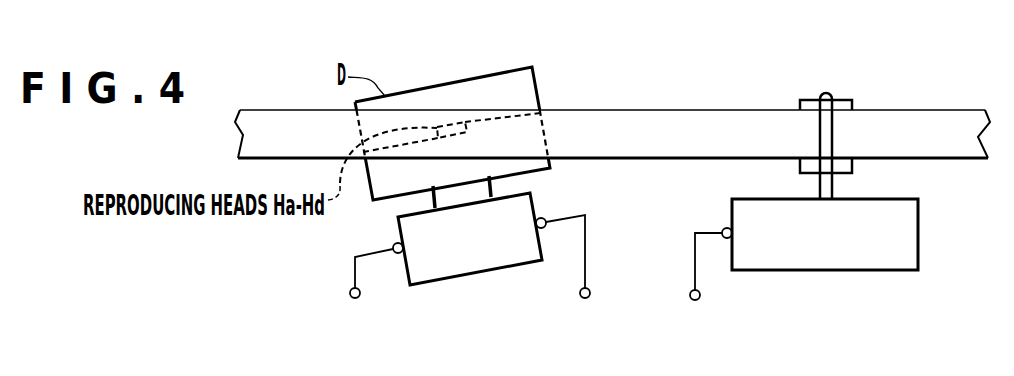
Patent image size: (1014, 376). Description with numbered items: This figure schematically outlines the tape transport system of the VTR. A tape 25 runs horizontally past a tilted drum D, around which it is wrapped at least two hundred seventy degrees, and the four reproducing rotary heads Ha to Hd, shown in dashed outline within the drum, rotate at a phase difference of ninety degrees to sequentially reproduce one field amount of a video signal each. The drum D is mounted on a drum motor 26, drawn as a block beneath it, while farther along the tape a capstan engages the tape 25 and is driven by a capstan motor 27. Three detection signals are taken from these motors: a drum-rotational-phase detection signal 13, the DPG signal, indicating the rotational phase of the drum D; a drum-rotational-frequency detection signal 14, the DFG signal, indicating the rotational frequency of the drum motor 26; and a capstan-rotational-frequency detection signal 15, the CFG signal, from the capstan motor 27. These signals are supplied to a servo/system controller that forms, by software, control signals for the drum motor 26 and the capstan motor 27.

The drum-rotational-phase detection signal 13 is at (365, 286).
The drum-rotational-frequency detection signal 14 is at (573, 272).
The capstan-rotational-frequency detection signal 15 is at (701, 281).
The tape 25 is at (732, 110).
The drum motor 26 is at (483, 272).
The capstan motor 27 is at (897, 271).